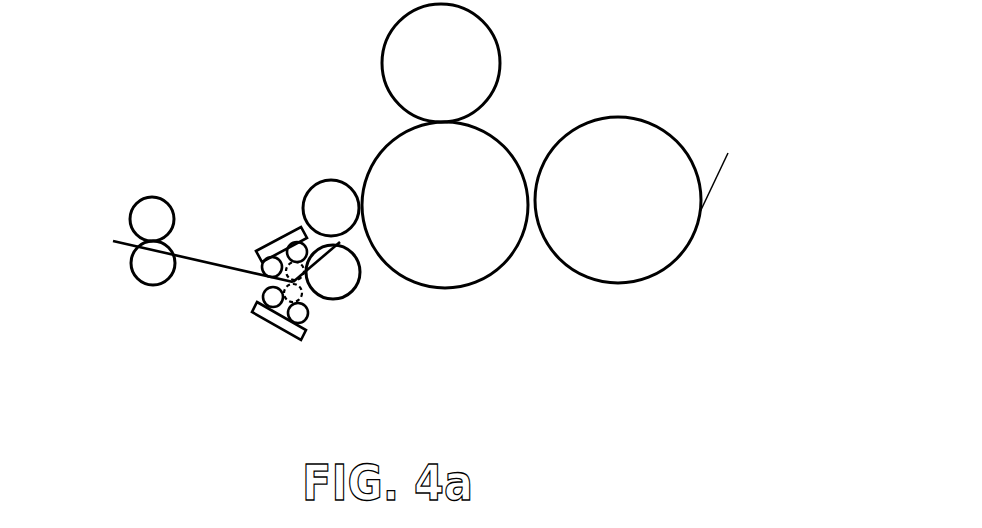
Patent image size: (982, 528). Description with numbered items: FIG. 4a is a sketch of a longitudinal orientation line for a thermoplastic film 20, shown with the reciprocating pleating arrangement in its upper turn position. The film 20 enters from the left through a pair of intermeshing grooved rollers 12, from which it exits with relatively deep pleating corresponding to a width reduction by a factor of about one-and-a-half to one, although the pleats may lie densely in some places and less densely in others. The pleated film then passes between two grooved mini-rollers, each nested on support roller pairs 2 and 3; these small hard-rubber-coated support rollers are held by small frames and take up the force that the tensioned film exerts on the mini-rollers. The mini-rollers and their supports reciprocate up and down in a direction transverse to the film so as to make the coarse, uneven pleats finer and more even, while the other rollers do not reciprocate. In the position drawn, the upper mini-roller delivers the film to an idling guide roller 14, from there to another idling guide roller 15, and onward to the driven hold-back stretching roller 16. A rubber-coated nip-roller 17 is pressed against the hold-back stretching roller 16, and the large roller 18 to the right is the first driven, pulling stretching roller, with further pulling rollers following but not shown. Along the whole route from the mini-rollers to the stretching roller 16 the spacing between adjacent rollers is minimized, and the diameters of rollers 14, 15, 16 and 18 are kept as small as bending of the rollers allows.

The support roller pair 2 is at (303, 321).
The support roller pair 3 is at (274, 299).
The grooved rollers 12 is at (153, 218).
The idling guide roller 14 is at (333, 272).
The idling guide roller 15 is at (330, 208).
The hold-back stretching roller 16 is at (445, 205).
The nip-roller 17 is at (441, 63).
The pulling stretching roller 18 is at (631, 200).
The thermoplastic film 20 is at (118, 238).